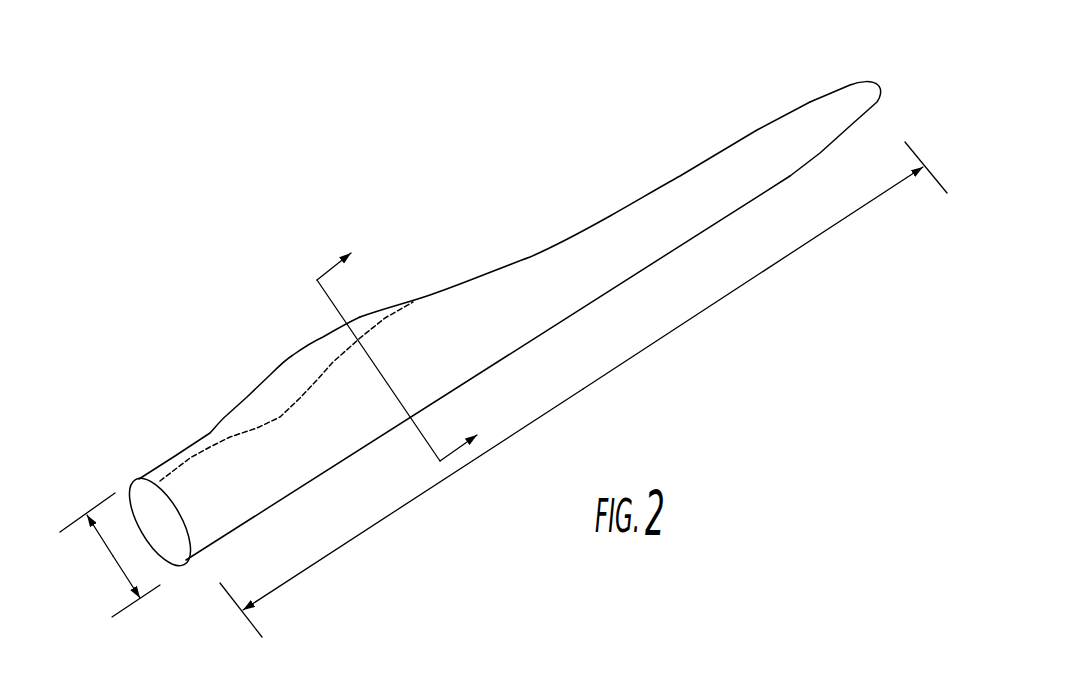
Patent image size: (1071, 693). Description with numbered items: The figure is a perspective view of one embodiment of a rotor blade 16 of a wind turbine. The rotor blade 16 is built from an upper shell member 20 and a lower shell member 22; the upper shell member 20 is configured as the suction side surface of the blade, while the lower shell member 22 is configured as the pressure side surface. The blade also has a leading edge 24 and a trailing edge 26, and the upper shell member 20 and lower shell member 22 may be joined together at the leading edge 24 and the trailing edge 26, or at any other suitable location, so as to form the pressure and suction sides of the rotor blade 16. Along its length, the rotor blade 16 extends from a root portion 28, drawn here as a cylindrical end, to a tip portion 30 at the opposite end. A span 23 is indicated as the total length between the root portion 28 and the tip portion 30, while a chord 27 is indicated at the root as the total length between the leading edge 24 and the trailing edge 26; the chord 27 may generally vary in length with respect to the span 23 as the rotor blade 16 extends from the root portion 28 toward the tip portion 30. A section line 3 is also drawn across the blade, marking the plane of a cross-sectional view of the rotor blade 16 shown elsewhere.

The rotor blade 16 is at (470, 203).
The upper shell member 20 is at (308, 401).
The lower shell member 22 is at (453, 345).
The span 23 is at (632, 357).
The leading edge 24 is at (610, 293).
The trailing edge 26 is at (610, 215).
The chord 27 is at (118, 568).
The root portion 28 is at (207, 472).
The tip portion 30 is at (822, 118).
The section line 3- 3 is at (404, 346).